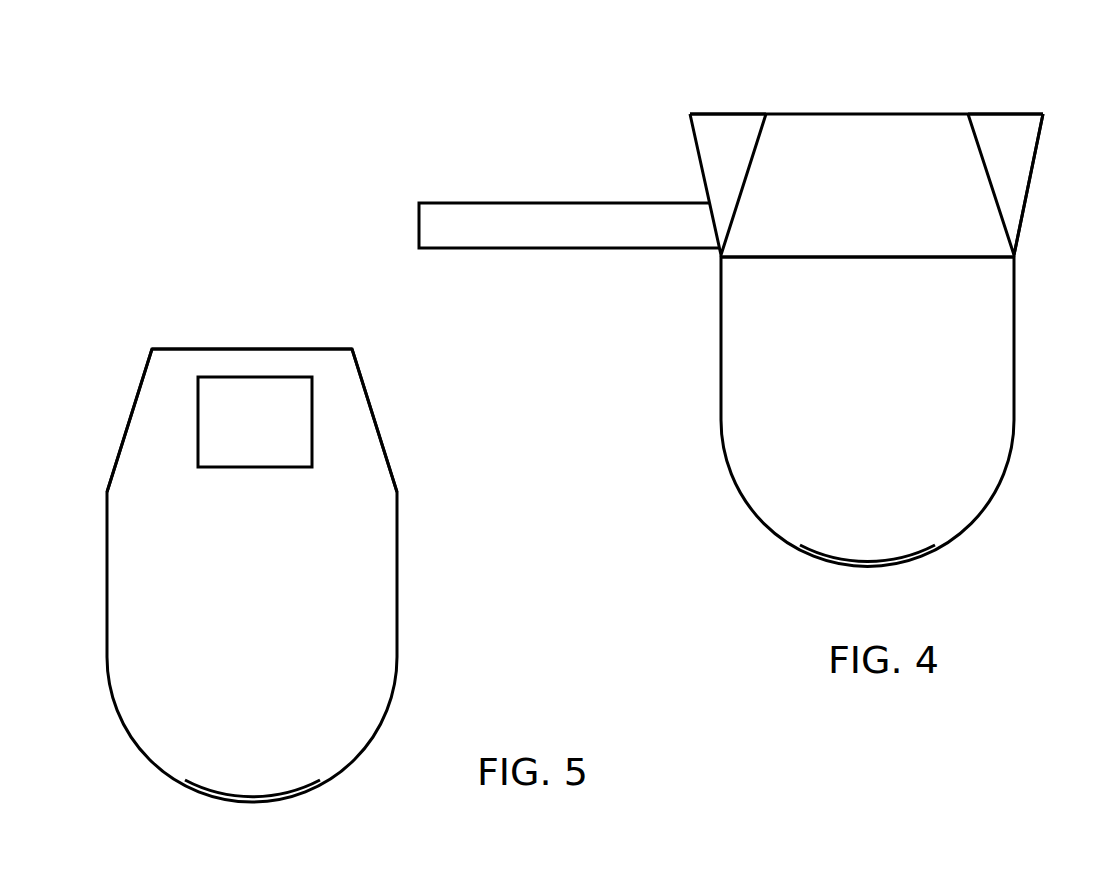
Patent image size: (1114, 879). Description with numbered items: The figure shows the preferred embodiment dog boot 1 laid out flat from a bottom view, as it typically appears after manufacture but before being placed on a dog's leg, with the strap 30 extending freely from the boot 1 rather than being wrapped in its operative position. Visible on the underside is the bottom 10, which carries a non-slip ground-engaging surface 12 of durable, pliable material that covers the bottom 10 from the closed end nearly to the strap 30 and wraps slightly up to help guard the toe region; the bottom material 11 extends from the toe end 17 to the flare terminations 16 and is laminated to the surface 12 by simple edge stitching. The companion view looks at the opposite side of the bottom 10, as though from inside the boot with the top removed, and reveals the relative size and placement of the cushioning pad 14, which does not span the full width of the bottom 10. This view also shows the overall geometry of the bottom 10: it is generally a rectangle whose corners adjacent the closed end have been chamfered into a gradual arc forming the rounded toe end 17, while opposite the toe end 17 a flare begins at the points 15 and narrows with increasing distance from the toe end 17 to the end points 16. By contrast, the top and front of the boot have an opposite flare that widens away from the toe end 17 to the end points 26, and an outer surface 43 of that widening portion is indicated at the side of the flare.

In FIG. 4, the boot 1 is at (590, 80).
In FIG. 4, the bottom 10 is at (720, 383).
In FIG. 4, the material 11 is at (824, 222).
In FIG. 5, the material 11 is at (251, 604).
In FIG. 4, the non-slip ground-engaging surface 12 is at (875, 430).
In FIG. 5, the cushioning pad 14 is at (269, 432).
In FIG. 5, the points 15 is at (107, 492).
In FIG. 4, the flare terminations 16 is at (766, 114).
In FIG. 5, the flare terminations 16 is at (152, 349).
In FIG. 4, the toe end 17 is at (872, 566).
In FIG. 5, the toe end 17 is at (257, 802).
In FIG. 4, the end points 26 is at (690, 114).
In FIG. 4, the strap 30 is at (516, 203).
In FIG. 4, the wedge outer surface 43 is at (1028, 204).